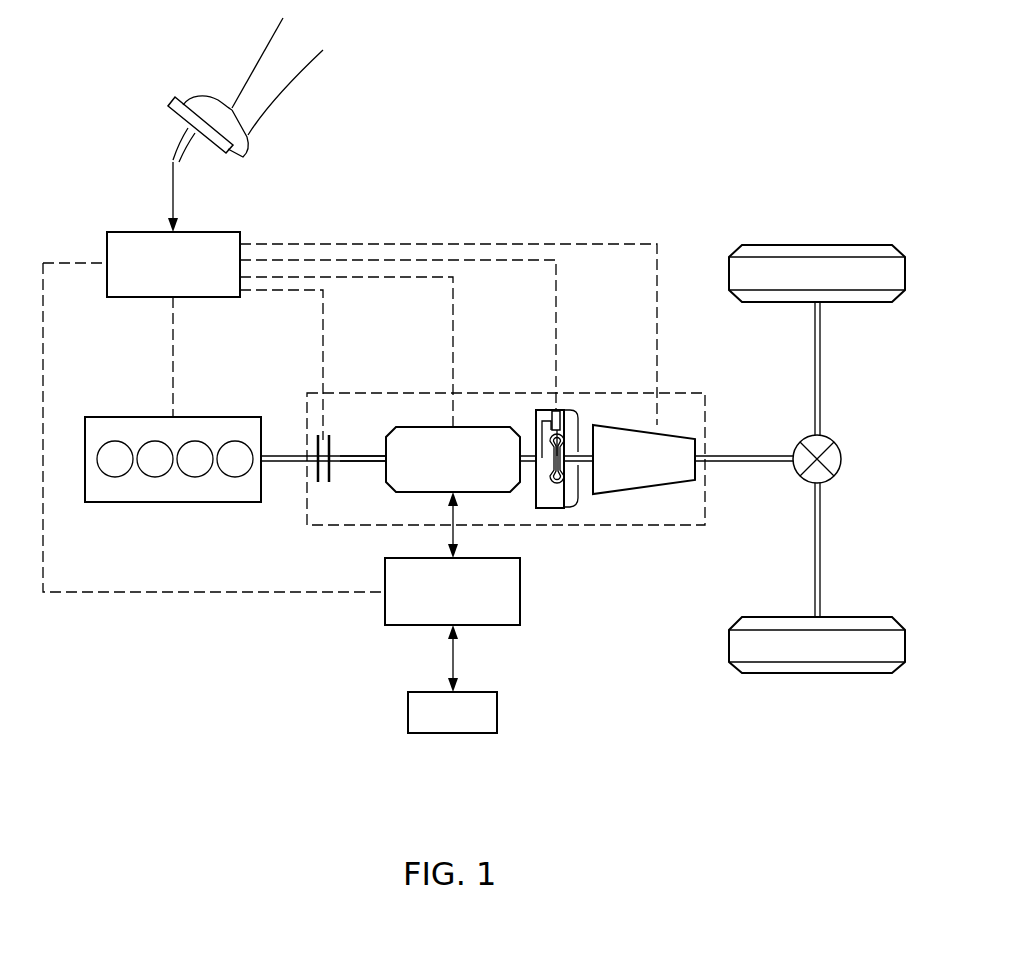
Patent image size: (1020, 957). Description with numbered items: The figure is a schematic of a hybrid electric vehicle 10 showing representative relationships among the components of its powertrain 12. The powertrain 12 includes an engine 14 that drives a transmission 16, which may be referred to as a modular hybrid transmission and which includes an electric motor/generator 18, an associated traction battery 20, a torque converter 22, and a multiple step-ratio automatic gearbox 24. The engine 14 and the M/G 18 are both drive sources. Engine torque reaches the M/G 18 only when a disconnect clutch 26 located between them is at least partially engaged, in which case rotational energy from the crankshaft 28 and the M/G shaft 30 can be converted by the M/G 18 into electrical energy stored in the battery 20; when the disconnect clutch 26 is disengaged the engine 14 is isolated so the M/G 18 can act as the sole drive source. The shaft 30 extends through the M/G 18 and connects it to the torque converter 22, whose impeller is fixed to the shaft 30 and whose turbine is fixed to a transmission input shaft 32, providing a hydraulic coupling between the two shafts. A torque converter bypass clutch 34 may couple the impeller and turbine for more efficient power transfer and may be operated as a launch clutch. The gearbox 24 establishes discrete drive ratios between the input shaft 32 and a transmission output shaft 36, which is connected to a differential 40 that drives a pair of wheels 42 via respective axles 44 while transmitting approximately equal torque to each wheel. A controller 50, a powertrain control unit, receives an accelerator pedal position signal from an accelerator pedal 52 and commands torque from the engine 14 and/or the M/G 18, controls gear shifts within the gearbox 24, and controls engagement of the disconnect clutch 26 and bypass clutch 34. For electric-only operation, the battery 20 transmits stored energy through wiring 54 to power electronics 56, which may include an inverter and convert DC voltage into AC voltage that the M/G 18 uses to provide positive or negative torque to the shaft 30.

The hybrid electric vehicle 10 is at (714, 178).
The powertrain 12 is at (255, 636).
The engine 14 is at (103, 416).
The transmission 16 is at (490, 392).
The electric motor/generator 18 is at (432, 426).
The traction battery 20 is at (408, 714).
The torque converter 22 is at (552, 509).
The gearbox 24 is at (637, 492).
The disconnect clutch 26 is at (320, 483).
The crankshaft 28 is at (289, 455).
The M/G shaft 30 is at (362, 455).
The transmission input shaft 32 is at (579, 455).
The torque converter bypass clutch 34 is at (556, 411).
The transmission output shaft 36 is at (758, 455).
The differential 40 is at (842, 460).
The wheels 42 is at (818, 244).
The axles 44 is at (821, 370).
The controller 50 is at (120, 231).
The accelerator pedal 52 is at (168, 112).
The wiring 54 is at (449, 656).
The power electronics 56 is at (521, 592).